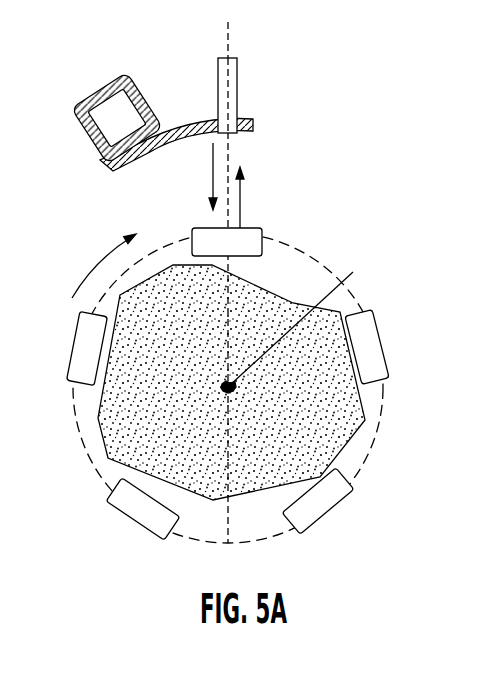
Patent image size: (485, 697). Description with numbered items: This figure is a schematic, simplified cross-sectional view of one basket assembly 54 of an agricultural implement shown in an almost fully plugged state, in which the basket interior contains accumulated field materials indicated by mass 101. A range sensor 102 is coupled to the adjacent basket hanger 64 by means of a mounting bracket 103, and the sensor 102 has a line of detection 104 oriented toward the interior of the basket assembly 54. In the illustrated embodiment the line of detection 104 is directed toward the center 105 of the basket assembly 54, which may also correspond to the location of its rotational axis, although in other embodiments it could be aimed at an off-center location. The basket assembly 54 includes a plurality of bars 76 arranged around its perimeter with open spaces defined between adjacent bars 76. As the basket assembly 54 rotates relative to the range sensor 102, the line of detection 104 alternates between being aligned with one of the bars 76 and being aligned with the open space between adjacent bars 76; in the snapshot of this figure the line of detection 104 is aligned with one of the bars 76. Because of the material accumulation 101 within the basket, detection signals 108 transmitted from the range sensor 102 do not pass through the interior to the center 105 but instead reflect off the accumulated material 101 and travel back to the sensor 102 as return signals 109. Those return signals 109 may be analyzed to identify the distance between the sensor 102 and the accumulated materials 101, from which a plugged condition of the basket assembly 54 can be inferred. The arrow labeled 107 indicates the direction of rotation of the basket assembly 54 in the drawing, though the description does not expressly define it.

The basket assembly 54 is at (55, 503).
The basket hanger 64 is at (93, 97).
The bars 76 is at (258, 232).
The mass of field materials 101 is at (117, 419).
The range sensor 102 is at (237, 86).
The mounting bracket 103 is at (130, 178).
The line of detection 104 is at (230, 27).
The center 105 is at (297, 317).
The rotation direction 107 is at (92, 265).
The detection signals 108 is at (213, 190).
The return signals 109 is at (247, 186).